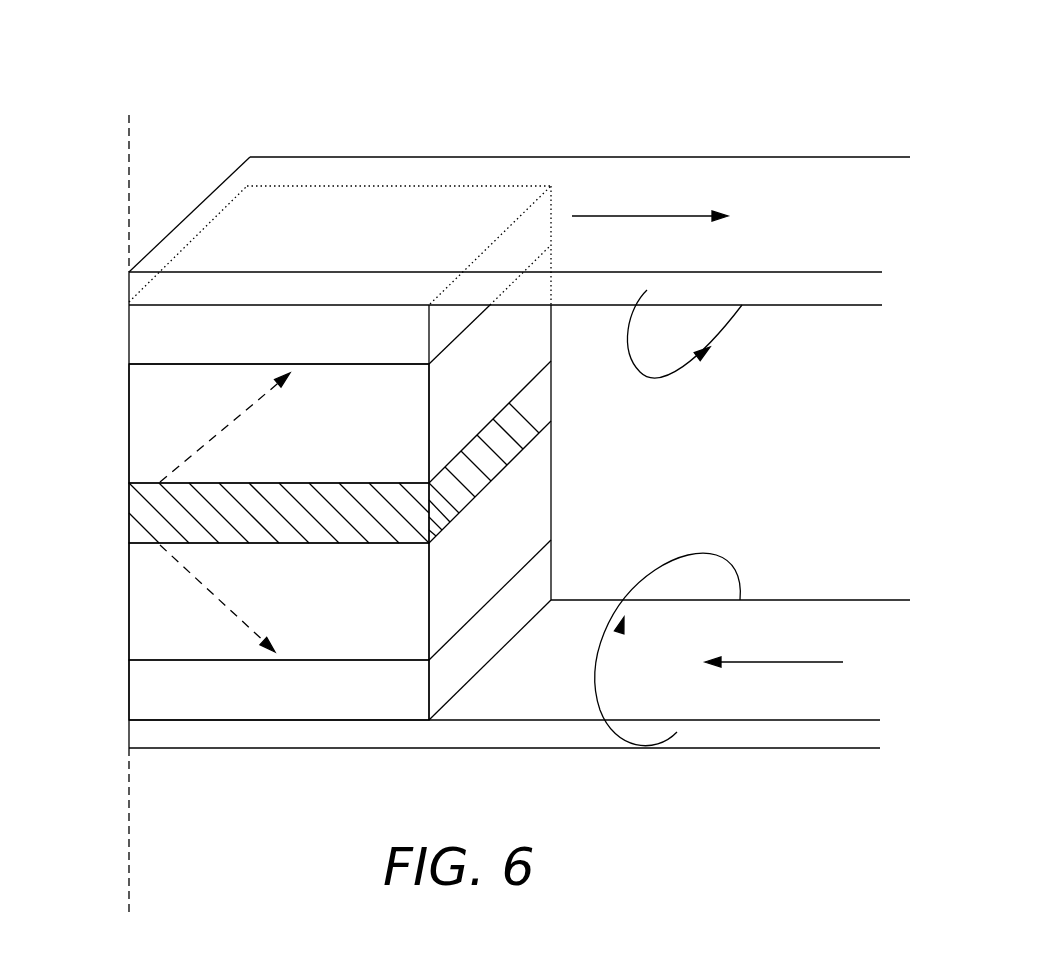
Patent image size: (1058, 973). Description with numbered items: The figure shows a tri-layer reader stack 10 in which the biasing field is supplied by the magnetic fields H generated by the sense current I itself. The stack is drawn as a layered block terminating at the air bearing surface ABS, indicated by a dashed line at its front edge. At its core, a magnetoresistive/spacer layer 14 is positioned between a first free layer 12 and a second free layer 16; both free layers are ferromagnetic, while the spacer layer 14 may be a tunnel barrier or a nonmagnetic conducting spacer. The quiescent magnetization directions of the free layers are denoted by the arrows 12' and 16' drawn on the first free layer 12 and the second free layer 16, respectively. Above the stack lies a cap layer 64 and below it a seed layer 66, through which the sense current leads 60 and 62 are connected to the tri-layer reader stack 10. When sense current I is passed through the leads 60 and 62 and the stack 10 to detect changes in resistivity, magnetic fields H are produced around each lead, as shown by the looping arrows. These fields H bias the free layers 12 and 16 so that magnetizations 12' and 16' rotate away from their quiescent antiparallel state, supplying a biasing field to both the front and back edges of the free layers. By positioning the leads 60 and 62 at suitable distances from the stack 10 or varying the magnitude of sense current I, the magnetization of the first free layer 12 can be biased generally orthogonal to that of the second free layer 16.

The tri-layer reader stack 10 is at (88, 478).
The first free layer 12 is at (279, 423).
The magnetization of first free layer 12' is at (238, 427).
The magnetoresistive/spacer layer 14 is at (292, 530).
The second free layer 16 is at (340, 600).
The magnetization of second free layer 16' is at (238, 598).
The sense current lead 60 is at (322, 301).
The sense current lead 62 is at (302, 746).
The cap layer 64 is at (316, 350).
The seed layer 66 is at (308, 705).
The air bearing surface ABS is at (133, 494).
The sense current I is at (718, 442).
The magnetic field H is at (718, 352).